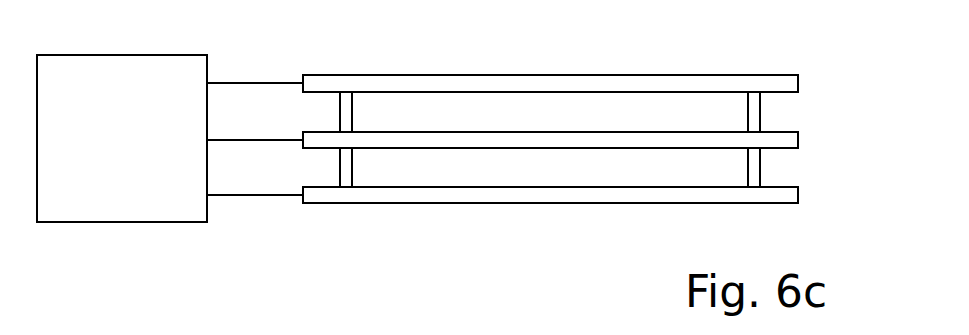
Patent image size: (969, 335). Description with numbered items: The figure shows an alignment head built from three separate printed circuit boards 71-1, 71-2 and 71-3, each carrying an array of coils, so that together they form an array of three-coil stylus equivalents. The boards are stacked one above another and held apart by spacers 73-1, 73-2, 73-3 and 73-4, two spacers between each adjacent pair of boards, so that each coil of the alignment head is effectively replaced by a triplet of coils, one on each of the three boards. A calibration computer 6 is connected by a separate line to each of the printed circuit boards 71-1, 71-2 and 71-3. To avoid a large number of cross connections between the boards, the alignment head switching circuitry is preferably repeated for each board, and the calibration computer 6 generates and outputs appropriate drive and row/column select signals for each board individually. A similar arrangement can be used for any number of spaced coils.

The calibration computer 6 is at (163, 55).
The printed circuit board 71-1 is at (798, 82).
The printed circuit board 71-2 is at (798, 138).
The printed circuit board 71-3 is at (798, 195).
The spacer 73-1 is at (348, 112).
The spacer 73-2 is at (755, 112).
The spacer 73-3 is at (348, 167).
The spacer 73-4 is at (755, 165).